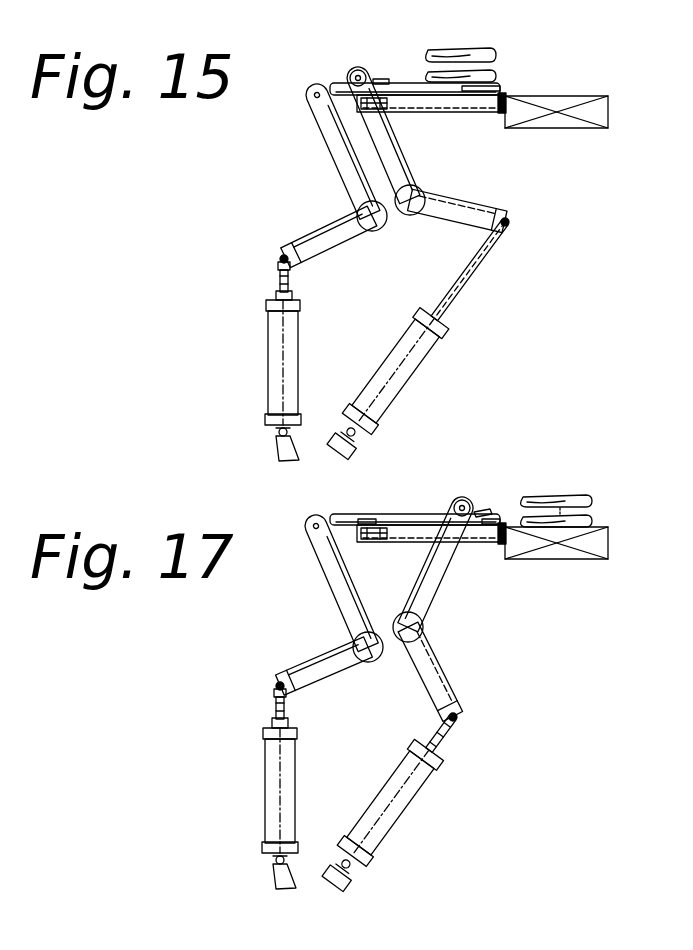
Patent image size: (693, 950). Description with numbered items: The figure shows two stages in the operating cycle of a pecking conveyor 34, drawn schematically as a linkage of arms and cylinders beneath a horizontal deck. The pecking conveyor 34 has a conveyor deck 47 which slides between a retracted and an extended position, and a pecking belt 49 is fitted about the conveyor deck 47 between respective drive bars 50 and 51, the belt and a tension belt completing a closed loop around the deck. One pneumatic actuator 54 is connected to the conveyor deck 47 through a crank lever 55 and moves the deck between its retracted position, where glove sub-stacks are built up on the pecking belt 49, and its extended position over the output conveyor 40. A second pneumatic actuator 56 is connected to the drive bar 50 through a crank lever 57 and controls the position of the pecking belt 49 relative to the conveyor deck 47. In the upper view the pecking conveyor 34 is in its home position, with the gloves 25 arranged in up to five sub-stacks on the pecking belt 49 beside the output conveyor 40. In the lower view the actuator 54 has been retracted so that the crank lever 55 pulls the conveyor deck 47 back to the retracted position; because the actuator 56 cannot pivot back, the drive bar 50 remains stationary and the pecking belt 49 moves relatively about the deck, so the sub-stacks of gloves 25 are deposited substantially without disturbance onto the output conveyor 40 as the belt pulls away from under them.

In FIG. 15, the gloves 25 is at (508, 63).
In FIG. 17, the gloves 25 is at (568, 480).
In FIG. 15, the pecking conveyor 34 is at (404, 78).
In FIG. 17, the pecking conveyor 34 is at (410, 510).
In FIG. 15, the output conveyor 40 is at (600, 110).
In FIG. 17, the output conveyor 40 is at (600, 548).
In FIG. 15, the conveyor deck 47 is at (453, 92).
In FIG. 17, the conveyor deck 47 is at (428, 517).
In FIG. 15, the pecking belt 49 is at (500, 88).
In FIG. 17, the pecking belt 49 is at (500, 524).
In FIG. 15, the drive bar 50 is at (378, 81).
In FIG. 17, the drive bar 50 is at (484, 510).
In FIG. 17, the drive bar 51 is at (366, 518).
In FIG. 15, the actuator 54 is at (263, 338).
In FIG. 17, the actuator 54 is at (265, 786).
In FIG. 15, the crank lever 55 is at (327, 133).
In FIG. 17, the crank lever 55 is at (333, 595).
In FIG. 15, the second pneumatic actuator 56 is at (418, 362).
In FIG. 17, the second pneumatic actuator 56 is at (400, 802).
In FIG. 15, the crank lever 57 is at (407, 155).
In FIG. 17, the crank lever 57 is at (432, 594).